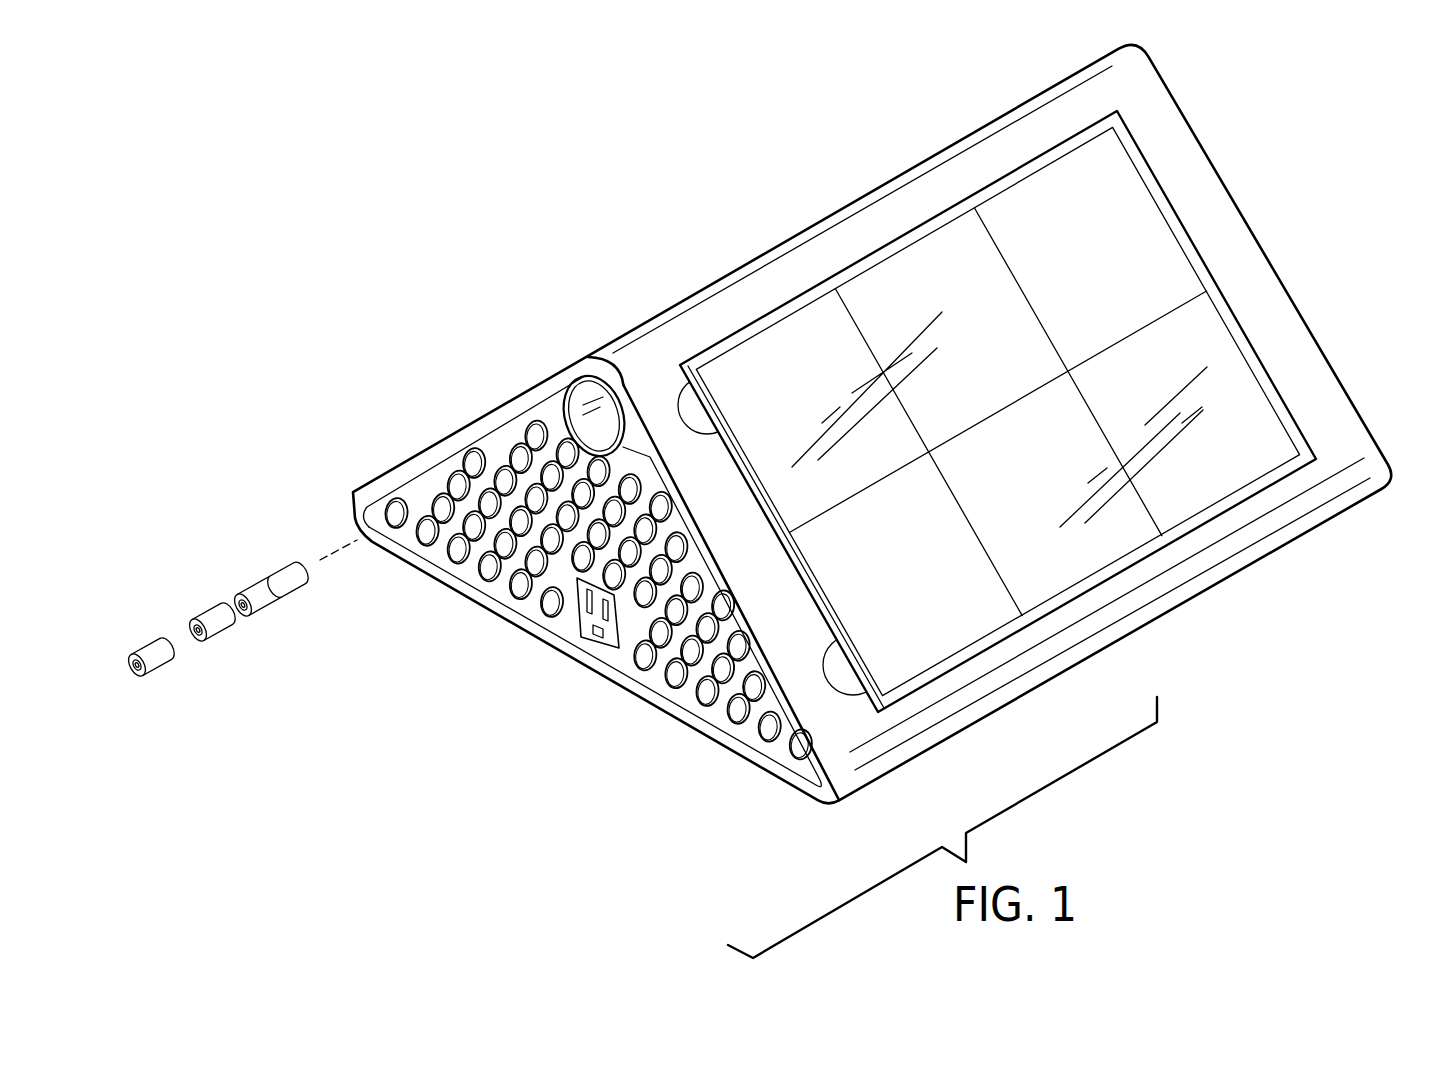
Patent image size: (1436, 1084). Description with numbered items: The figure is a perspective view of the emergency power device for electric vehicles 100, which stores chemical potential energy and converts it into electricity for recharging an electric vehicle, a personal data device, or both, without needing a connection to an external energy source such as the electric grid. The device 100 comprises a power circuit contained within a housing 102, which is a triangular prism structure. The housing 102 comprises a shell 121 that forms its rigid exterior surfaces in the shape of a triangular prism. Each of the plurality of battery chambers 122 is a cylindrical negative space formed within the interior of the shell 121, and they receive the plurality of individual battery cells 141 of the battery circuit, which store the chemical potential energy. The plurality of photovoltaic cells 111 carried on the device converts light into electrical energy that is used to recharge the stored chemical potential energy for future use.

The emergency power device for electric vehicles 100 is at (593, 210).
The housing 102 is at (1193, 133).
The plurality of photovoltaic cells 111 is at (1147, 258).
The shell 121 is at (1293, 340).
The plurality of battery chambers 122 is at (583, 492).
The plurality of individual battery cells 141 is at (298, 542).